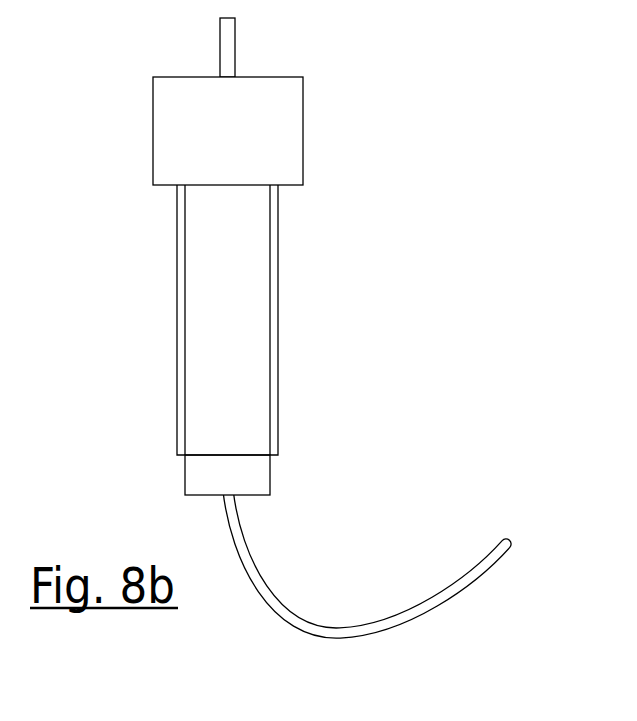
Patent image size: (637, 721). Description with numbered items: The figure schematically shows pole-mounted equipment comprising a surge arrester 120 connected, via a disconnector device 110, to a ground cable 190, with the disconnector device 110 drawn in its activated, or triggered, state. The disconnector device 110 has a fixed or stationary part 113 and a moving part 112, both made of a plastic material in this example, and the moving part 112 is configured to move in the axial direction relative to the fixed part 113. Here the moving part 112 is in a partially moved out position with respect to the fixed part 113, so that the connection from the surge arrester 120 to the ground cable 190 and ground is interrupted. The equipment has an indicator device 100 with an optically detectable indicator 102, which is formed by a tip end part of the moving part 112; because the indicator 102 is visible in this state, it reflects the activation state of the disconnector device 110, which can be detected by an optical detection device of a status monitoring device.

The indicator device 100 is at (142, 457).
The optically detectable indicator 102 is at (185, 477).
The disconnector device 110 is at (339, 325).
The moving part 112 is at (270, 270).
The fixed part 113 is at (279, 217).
The surge arrester 120 is at (303, 120).
The ground cable 190 is at (245, 538).